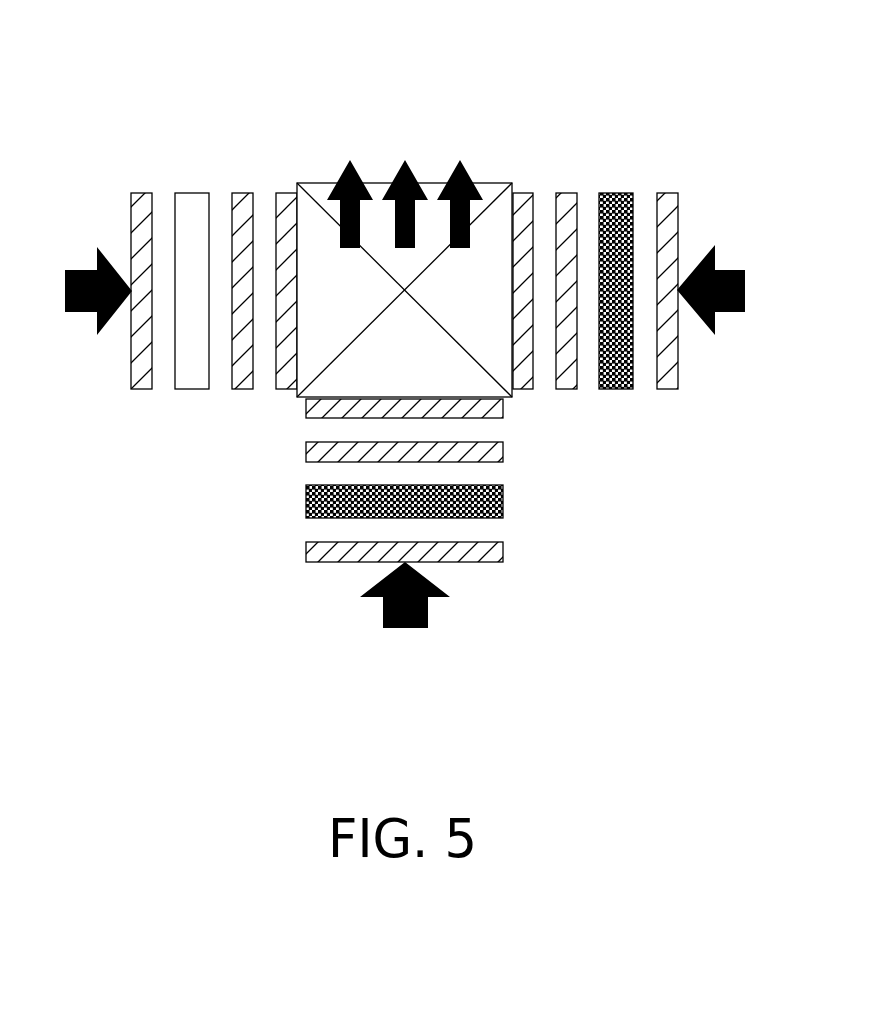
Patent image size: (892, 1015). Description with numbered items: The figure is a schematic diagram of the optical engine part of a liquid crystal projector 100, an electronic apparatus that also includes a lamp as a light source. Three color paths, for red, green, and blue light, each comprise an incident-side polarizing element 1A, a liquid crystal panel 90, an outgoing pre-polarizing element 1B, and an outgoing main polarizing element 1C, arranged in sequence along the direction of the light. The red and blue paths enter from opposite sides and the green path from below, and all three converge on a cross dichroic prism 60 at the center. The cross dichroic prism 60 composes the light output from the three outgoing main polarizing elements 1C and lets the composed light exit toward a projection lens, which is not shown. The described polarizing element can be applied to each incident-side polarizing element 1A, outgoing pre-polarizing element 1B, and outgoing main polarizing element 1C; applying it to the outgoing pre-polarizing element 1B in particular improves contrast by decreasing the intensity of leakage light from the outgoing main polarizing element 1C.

The liquid crystal projector 100 is at (138, 70).
The incident-side polarizing element 1A is at (140, 193).
The liquid crystal panel 90 is at (192, 193).
The outgoing pre-polarizing element 1B is at (243, 193).
The outgoing main polarizing element 1C is at (287, 193).
The cross dichroic prism 60 is at (491, 182).